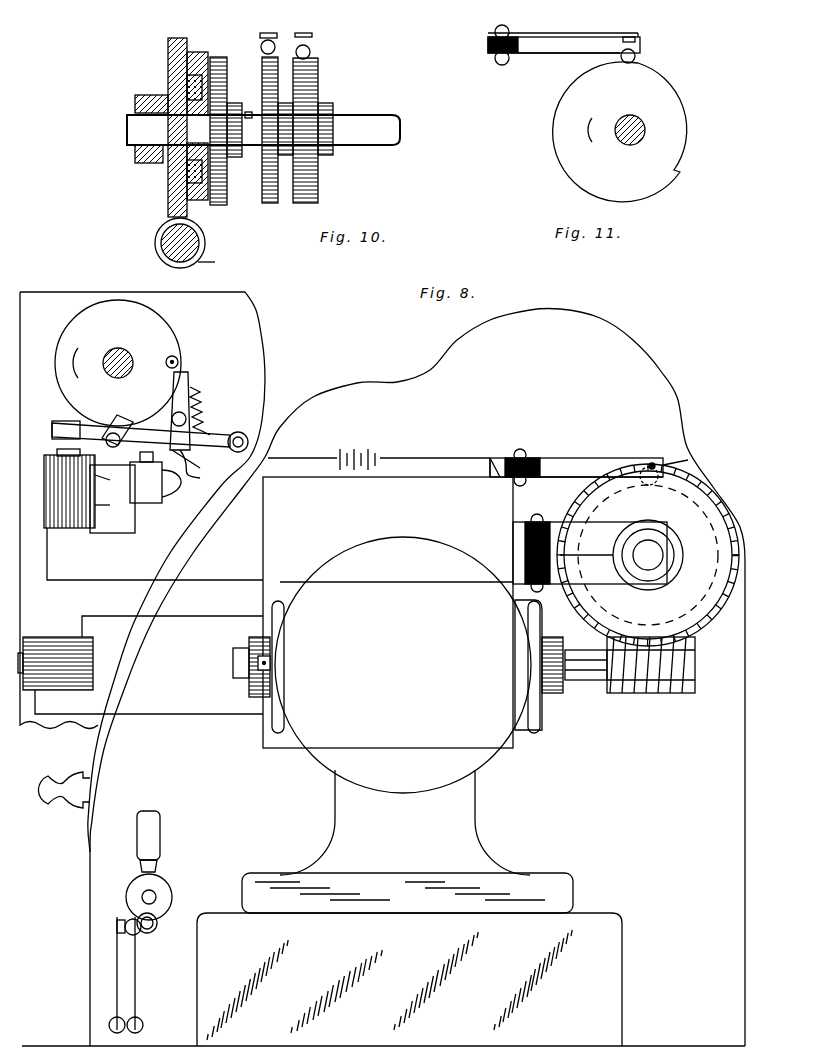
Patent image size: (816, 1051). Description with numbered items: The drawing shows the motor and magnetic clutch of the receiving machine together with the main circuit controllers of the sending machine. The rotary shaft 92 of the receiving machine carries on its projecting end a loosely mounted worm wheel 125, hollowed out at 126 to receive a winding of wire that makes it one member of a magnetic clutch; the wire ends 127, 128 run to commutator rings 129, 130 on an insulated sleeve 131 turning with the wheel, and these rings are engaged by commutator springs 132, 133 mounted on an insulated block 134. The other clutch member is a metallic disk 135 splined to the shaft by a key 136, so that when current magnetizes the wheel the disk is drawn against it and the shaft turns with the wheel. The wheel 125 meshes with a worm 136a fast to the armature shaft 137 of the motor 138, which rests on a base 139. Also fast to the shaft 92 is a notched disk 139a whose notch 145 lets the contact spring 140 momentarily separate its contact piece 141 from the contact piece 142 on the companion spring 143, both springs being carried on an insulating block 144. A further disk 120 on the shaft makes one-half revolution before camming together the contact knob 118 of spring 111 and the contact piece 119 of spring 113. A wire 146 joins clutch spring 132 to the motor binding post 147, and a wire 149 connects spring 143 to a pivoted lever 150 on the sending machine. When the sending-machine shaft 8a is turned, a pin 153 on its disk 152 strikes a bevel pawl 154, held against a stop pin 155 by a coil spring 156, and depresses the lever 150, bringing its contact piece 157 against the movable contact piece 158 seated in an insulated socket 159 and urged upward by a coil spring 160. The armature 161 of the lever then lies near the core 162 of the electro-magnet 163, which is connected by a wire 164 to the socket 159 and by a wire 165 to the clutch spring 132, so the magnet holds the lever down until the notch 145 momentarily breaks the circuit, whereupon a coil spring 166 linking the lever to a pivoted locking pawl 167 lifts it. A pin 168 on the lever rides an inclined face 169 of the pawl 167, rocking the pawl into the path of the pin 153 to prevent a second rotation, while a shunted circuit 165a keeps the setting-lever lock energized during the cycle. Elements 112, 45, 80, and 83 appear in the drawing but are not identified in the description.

In FIG. 10, the rotary shaft 92 is at (378, 133).
In FIG. 11, the rotary shaft 92 is at (630, 145).
In FIG. 8, the rotary shaft 92 is at (648, 570).
In FIG. 10, the disk 120 is at (318, 80).
In FIG. 11, the disk 120 is at (720, 115).
In FIG. 10, the contact spring 113 is at (268, 33).
In FIG. 11, the contact spring 113 is at (568, 25).
In FIG. 10, the contact piece 119 is at (312, 35).
In FIG. 11, the contact piece 119 is at (635, 38).
In FIG. 10, the contact knob 118 is at (310, 52).
In FIG. 11, the contact knob 118 is at (635, 52).
In FIG. 11, the contact block 112 is at (488, 45).
In FIG. 11, the contact spring 111 is at (550, 53).
In FIG. 10, the worm wheel 125 is at (172, 45).
In FIG. 10, the hollowed-out portion 126 is at (187, 40).
In FIG. 10, the wire end 127 is at (175, 100).
In FIG. 10, the wire end 128 is at (172, 175).
In FIG. 8, the wire end 128 is at (263, 515).
In FIG. 10, the commutator ring 129 is at (170, 102).
In FIG. 10, the commutator ring 130 is at (140, 155).
In FIG. 10, the insulated sleeve 131 is at (135, 105).
In FIG. 10, the clutch disk 135 is at (220, 205).
In FIG. 10, the key 136 is at (248, 112).
In FIG. 10, the worm 136a is at (228, 261).
In FIG. 8, the worm 136a is at (655, 693).
In FIG. 10, the armature shaft 137 is at (160, 243).
In FIG. 8, the armature shaft 137 is at (590, 680).
In FIG. 8, the motor 138 is at (403, 706).
In FIG. 8, the base 139 is at (409, 959).
In FIG. 10, the notched disk 139a is at (325, 155).
In FIG. 8, the notched disk 139a is at (722, 495).
In FIG. 8, the contact spring 140 is at (535, 500).
In FIG. 8, the contact piece 141 is at (688, 460).
In FIG. 8, the contact piece 142 is at (652, 466).
In FIG. 8, the companion spring 143 is at (585, 445).
In FIG. 8, the insulating block 144 is at (495, 458).
In FIG. 8, the notch 145 is at (655, 500).
In FIG. 8, the wire 146 is at (528, 632).
In FIG. 8, the binding post 147 is at (270, 660).
In FIG. 8, the wire 149 is at (490, 458).
In FIG. 8, the commutator spring 132 is at (590, 545).
In FIG. 8, the commutator spring 133 is at (565, 615).
In FIG. 8, the insulated block 134 is at (513, 535).
In FIG. 8, the disk 152 is at (110, 330).
In FIG. 8, the shaft 8a is at (130, 356).
In FIG. 8, the operating pin 153 is at (178, 360).
In FIG. 8, the bevel pawl 154 is at (360, 449).
In FIG. 8, the stop pin 155 is at (75, 425).
In FIG. 8, the coil spring 156 is at (128, 410).
In FIG. 8, the contact piece 157 is at (80, 453).
In FIG. 8, the movable contact piece 158 is at (177, 490).
In FIG. 8, the insulated socket 159 is at (145, 503).
In FIG. 8, the coil spring 160 is at (150, 485).
In FIG. 8, the armature 161 is at (60, 455).
In FIG. 8, the core 162 is at (114, 484).
In FIG. 8, the electro-magnet 163 is at (116, 507).
In FIG. 8, the wire 164 is at (115, 533).
In FIG. 8, the wire 165 is at (205, 570).
In FIG. 8, the shunted circuit 165a is at (170, 616).
In FIG. 8, the coil spring 166 is at (206, 405).
In FIG. 8, the locking pawl 167 is at (188, 385).
In FIG. 8, the pin 168 is at (203, 467).
In FIG. 8, the inclined face 169 is at (199, 458).
In FIG. 8, the pivoted lever 150 is at (238, 432).
In FIG. 8, the coil 45 is at (45, 637).
In FIG. 8, the lever 80 is at (160, 830).
In FIG. 8, the handle 83 is at (45, 800).